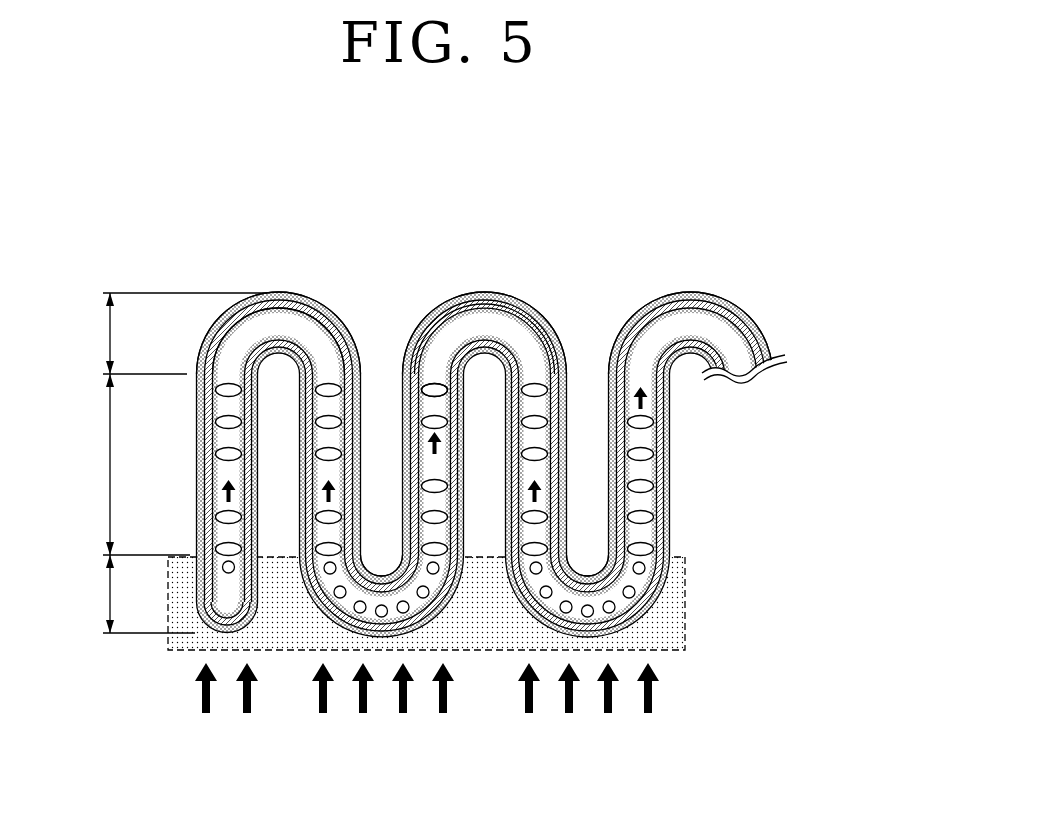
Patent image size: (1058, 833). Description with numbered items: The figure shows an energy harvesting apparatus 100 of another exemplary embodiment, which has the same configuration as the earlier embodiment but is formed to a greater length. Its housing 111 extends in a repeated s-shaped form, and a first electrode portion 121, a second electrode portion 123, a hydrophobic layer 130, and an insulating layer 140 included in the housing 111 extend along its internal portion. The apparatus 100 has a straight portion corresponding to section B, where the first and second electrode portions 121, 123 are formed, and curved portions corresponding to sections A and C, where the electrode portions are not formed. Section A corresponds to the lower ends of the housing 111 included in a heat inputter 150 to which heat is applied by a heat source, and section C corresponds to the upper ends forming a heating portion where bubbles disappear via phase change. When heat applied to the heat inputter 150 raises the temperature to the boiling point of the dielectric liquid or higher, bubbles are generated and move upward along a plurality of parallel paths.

The energy harvesting apparatus 100 is at (477, 144).
The housing 111 is at (302, 296).
The hydrophobic layer 130 is at (277, 298).
The insulating layer 140 is at (328, 299).
The first electrode portion 121 is at (605, 490).
The second electrode portion 123 is at (676, 466).
The heat inputter 150 is at (688, 599).